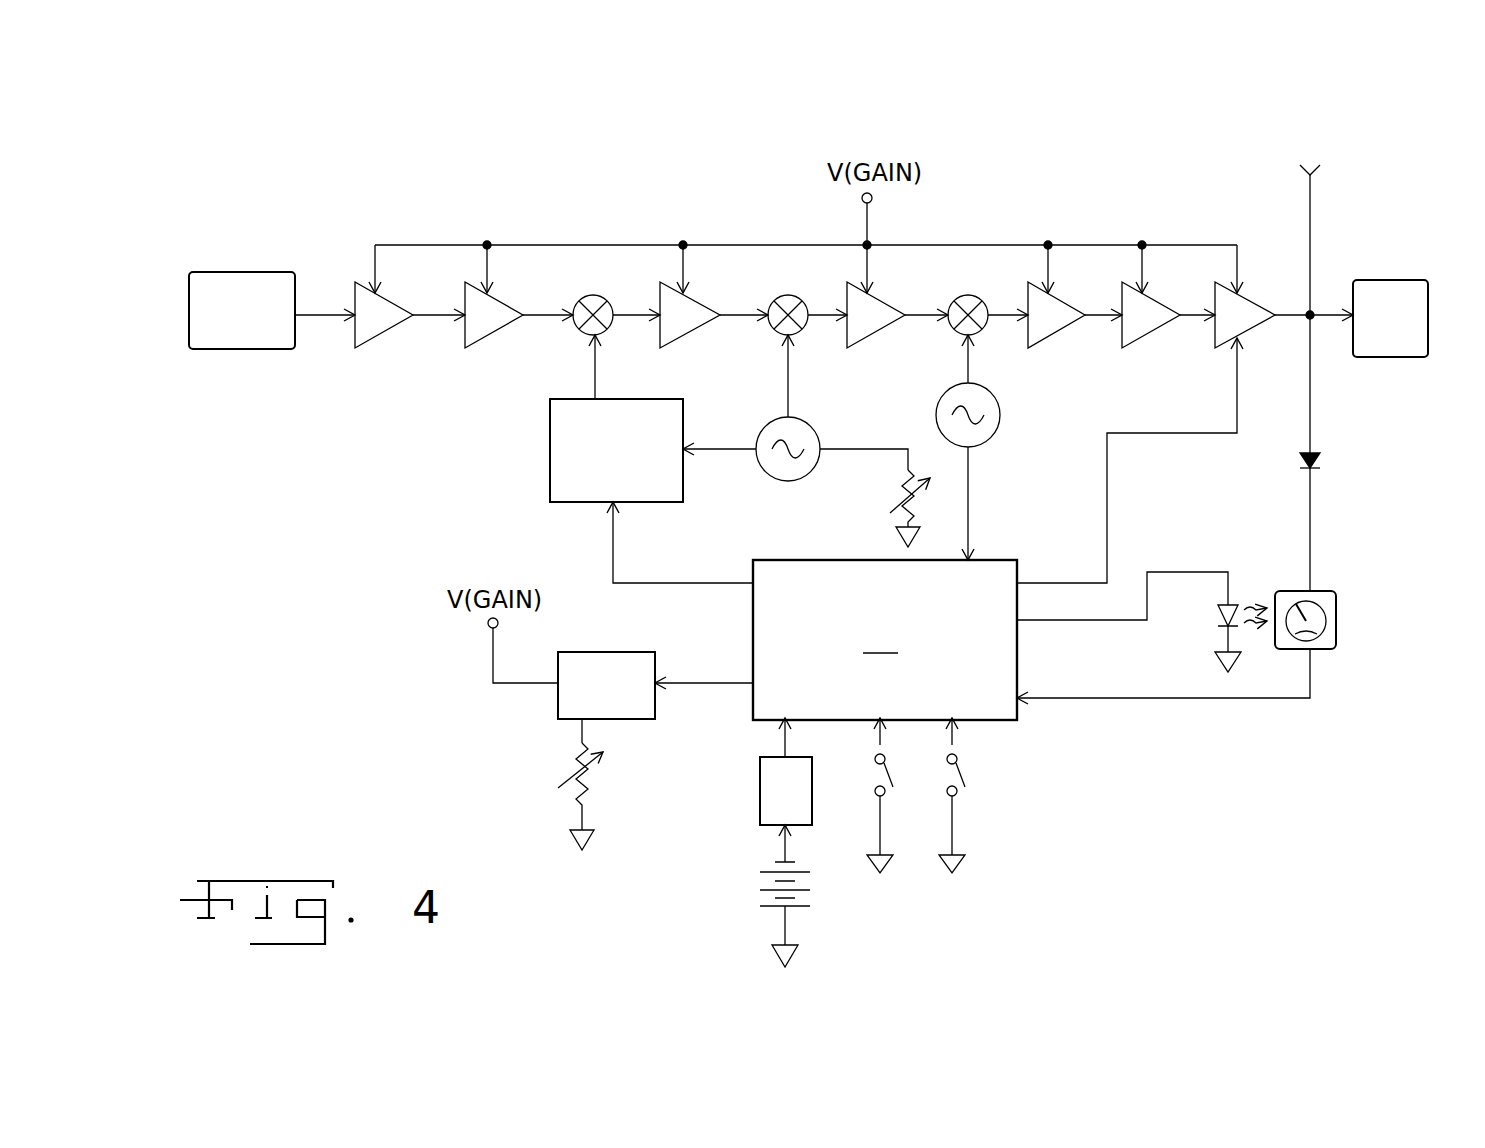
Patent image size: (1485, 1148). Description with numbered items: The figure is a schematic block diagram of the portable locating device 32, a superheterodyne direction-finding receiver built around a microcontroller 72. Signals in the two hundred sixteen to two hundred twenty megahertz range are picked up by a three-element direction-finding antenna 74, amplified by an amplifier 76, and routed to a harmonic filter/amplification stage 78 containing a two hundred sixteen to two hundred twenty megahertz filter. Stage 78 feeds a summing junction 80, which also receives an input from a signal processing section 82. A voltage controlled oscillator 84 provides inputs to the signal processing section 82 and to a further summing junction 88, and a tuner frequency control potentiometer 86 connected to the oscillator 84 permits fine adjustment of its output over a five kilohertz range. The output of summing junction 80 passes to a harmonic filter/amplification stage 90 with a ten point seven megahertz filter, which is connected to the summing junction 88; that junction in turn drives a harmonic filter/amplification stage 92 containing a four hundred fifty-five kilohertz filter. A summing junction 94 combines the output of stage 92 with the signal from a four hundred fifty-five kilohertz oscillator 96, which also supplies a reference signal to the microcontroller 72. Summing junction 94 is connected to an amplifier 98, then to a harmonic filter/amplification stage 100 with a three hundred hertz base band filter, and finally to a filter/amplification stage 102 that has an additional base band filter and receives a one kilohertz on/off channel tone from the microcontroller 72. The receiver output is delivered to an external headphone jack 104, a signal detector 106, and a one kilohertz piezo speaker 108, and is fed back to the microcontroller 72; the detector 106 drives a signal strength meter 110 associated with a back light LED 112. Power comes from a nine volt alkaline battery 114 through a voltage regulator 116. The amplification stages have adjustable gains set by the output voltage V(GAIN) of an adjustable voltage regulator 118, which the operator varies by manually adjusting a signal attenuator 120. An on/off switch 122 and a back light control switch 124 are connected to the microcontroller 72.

The portable locating device 32 is at (1168, 797).
The microcontroller 72 is at (885, 640).
The antenna 74 is at (248, 272).
The amplifier 76 is at (382, 340).
The harmonic filter/amplification stage 78 is at (492, 340).
The summing junction 80 is at (592, 294).
The signal processing section 82 is at (550, 440).
The voltage controlled oscillator 84 is at (814, 427).
The tuner frequency control potentiometer 86 is at (925, 475).
The summing junction 88 is at (784, 294).
The harmonic filter/amplification stage 90 is at (695, 333).
The harmonic filter/amplification stage 92 is at (872, 333).
The summing junction 94 is at (965, 294).
The 455 kilohertz oscillator 96 is at (985, 440).
The amplifier 98 is at (1052, 340).
The harmonic filter/amplification stage 100 is at (1158, 333).
The filter/amplification stage 102 is at (1253, 333).
The external headphone jack 104 is at (1300, 173).
The signal detector 106 is at (1322, 458).
The piezo speaker 108 is at (1392, 280).
The signal strength meter 110 is at (1336, 615).
The back light LED 112 is at (1218, 617).
The battery 114 is at (760, 880).
The voltage regulator 116 is at (760, 782).
The adjustable voltage regulator 118 is at (608, 652).
The signal attenuator 120 is at (572, 770).
The on/off switch 122 is at (960, 792).
The back light control switch 124 is at (888, 793).